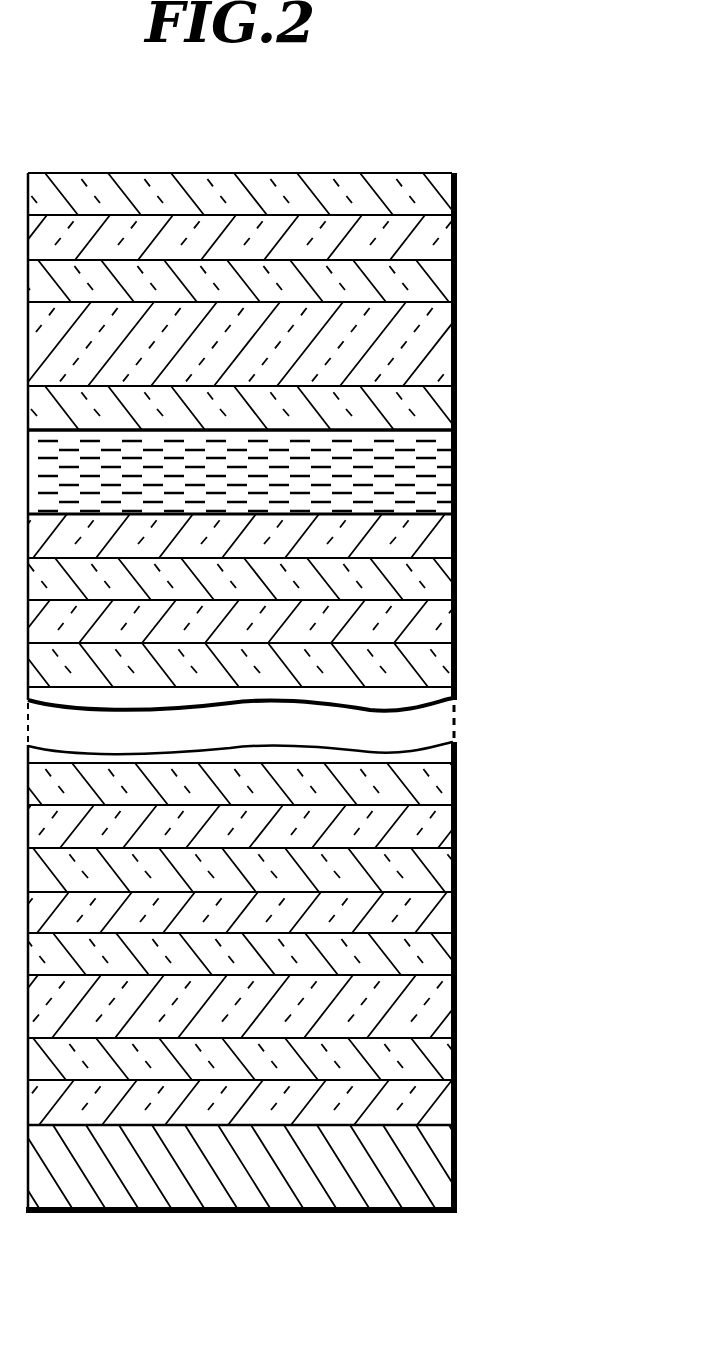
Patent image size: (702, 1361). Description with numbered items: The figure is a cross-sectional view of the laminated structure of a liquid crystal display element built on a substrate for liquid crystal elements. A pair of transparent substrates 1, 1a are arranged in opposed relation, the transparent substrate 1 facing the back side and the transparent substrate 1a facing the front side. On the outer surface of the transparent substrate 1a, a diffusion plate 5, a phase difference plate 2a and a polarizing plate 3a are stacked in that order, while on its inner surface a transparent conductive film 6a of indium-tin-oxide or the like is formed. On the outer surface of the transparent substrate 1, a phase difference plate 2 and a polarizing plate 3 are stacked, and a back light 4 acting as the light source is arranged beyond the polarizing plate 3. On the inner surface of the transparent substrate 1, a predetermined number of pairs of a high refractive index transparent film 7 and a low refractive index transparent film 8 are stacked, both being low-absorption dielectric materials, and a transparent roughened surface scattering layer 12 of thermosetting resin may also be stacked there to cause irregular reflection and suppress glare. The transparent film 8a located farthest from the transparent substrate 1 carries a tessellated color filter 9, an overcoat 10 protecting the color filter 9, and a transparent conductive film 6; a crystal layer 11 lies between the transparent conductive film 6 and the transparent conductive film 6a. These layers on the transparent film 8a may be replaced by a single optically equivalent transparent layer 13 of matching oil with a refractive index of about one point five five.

The polarizing plate 3a is at (456, 195).
The phase difference plate 2a is at (456, 240).
The diffusion plate 5 is at (456, 283).
The transparent substrate 1a is at (456, 343).
The transparent conductive film 6a is at (456, 412).
The crystal layer 11 is at (456, 487).
The transparent conductive film 6 is at (456, 543).
The overcoat 10 is at (456, 583).
The color filter 9 is at (282, 621).
The optically equivalent transparent layer 13 is at (344, 514).
The transparent film 8a is at (456, 668).
The low refractive index transparent film 8 is at (456, 780).
The high refractive index transparent film 7 is at (456, 828).
The transparent roughened surface scattering layer 12 is at (456, 962).
The transparent substrate 1 is at (456, 1023).
The phase difference plate 2 is at (456, 1067).
The polarizing plate 3 is at (456, 1108).
The back light 4 is at (456, 1175).